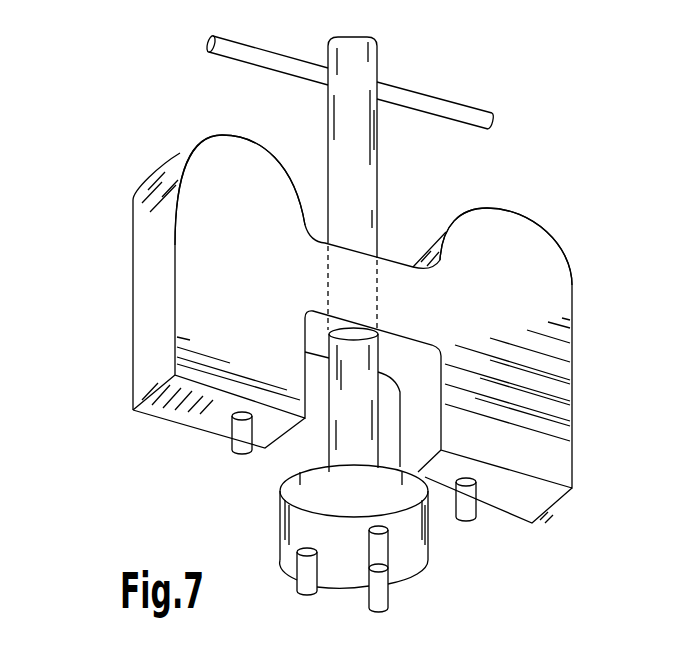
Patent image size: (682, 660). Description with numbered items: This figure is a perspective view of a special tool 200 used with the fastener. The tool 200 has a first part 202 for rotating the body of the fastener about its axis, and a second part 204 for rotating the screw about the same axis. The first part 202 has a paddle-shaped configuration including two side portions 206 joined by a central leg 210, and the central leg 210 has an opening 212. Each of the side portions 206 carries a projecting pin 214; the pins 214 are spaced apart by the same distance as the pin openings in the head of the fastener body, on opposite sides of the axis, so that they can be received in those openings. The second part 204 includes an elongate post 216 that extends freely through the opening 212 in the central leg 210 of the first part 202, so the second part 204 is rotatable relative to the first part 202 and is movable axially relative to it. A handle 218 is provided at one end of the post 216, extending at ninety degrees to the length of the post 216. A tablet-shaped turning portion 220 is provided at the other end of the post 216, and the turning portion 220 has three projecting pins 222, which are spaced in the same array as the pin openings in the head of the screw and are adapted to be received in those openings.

The tool 200 is at (132, 505).
The first part 202 is at (130, 427).
The second part 204 is at (305, 607).
The side portions 206 is at (158, 281).
The central leg 210 is at (364, 290).
The opening 212 is at (327, 280).
The projecting pins 214 is at (238, 424).
The elongate post 216 is at (353, 141).
The handle 218 is at (288, 66).
The turning portion 220 is at (292, 508).
The projecting pins 222 is at (300, 575).